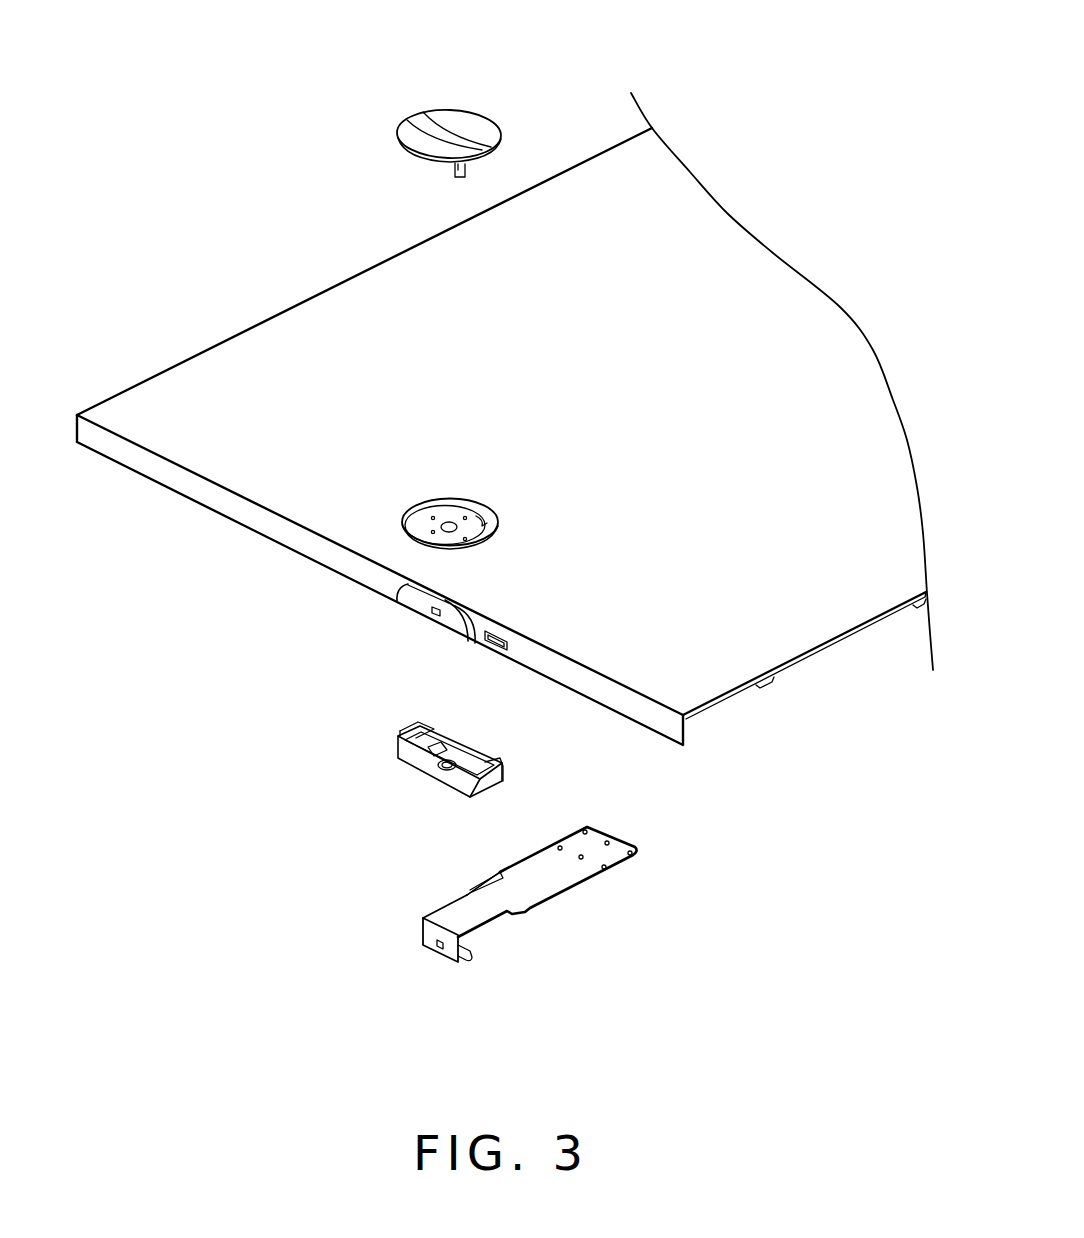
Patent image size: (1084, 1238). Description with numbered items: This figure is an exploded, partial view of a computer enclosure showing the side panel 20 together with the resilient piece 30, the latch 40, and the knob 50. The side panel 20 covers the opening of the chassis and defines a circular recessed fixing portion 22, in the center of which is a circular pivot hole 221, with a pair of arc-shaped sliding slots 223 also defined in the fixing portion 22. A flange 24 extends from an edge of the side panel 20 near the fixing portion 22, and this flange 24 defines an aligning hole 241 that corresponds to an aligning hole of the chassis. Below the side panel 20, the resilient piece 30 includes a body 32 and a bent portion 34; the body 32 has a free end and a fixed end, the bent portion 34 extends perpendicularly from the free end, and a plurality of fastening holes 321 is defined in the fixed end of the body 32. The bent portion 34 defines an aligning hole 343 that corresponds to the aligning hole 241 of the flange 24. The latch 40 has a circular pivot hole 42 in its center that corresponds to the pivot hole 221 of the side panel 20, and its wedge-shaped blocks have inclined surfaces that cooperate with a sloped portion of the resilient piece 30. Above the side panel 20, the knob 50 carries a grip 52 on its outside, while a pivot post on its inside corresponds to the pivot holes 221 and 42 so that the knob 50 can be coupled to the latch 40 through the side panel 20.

The side panel 20 is at (760, 217).
The fixing portion 22 is at (422, 518).
The pivot hole 221 is at (416, 528).
The sliding slots 223 is at (435, 510).
The flange 24 is at (168, 475).
The aligning hole 241 is at (432, 612).
The resilient piece 30 is at (503, 891).
The body 32 is at (601, 849).
The fastening holes 321 is at (630, 852).
The bent portion 34 is at (393, 957).
The aligning hole 343 is at (432, 948).
The latch 40 is at (367, 771).
The pivot hole 42 is at (432, 772).
The knob 50 is at (462, 89).
The grip 52 is at (420, 113).